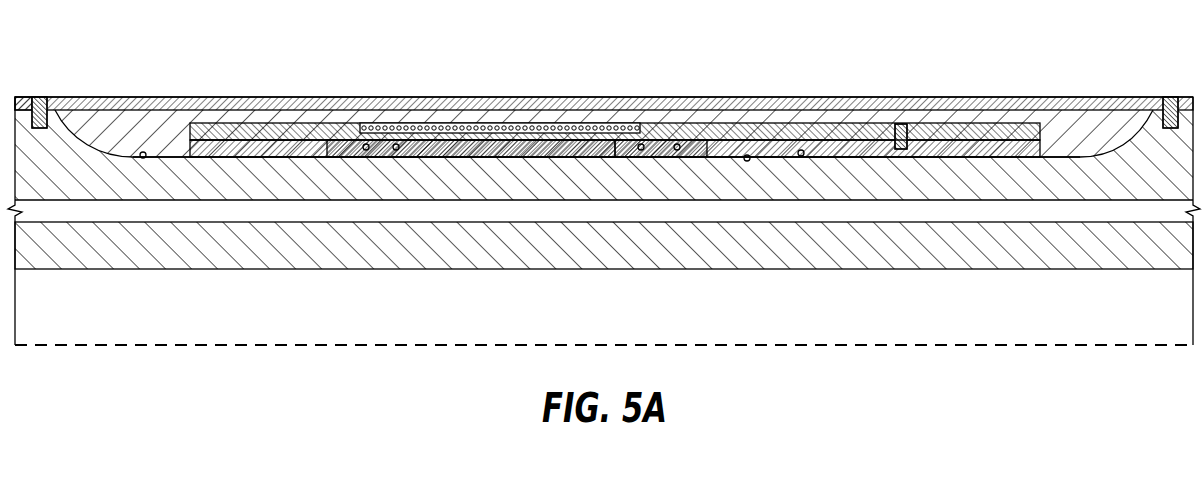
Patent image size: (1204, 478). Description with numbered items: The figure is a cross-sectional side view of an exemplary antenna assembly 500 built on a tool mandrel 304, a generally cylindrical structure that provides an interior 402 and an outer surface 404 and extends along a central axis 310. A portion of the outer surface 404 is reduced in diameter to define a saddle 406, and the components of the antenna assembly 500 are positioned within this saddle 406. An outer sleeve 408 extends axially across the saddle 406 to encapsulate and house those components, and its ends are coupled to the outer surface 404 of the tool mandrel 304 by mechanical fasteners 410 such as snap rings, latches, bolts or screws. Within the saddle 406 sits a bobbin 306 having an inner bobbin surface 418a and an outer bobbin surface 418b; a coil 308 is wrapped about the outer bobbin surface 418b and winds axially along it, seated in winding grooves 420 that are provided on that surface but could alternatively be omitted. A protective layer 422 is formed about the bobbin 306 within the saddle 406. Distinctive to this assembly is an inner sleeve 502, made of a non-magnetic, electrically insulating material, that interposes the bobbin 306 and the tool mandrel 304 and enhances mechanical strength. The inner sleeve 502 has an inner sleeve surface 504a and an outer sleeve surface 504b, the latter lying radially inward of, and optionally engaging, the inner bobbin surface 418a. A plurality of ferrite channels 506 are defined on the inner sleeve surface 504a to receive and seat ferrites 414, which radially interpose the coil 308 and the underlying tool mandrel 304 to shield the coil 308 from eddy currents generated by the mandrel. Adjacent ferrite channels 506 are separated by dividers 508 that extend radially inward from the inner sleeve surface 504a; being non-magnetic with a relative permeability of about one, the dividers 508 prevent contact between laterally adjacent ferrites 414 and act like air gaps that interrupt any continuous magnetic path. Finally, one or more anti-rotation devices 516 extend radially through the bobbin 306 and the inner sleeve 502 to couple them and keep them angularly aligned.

The antenna assembly 500 is at (88, 30).
The interior 402 is at (612, 322).
The tool mandrel 304 is at (50, 266).
The bobbin 306 is at (1031, 130).
The coil 308 is at (445, 135).
The central axis 310 is at (745, 345).
The outer surface 404 is at (20, 97).
The saddle 406 is at (135, 157).
The outer sleeve 408 is at (990, 103).
The mechanical fasteners 410 is at (50, 110).
The ferrites 414 is at (592, 127).
The inner bobbin surface 418a is at (226, 141).
The outer bobbin surface 418b is at (934, 134).
The winding grooves 420 is at (444, 126).
The protective layer 422 is at (132, 118).
The inner sleeve 502 is at (778, 148).
The inner sleeve surface 504a is at (745, 155).
The outer sleeve surface 504b is at (799, 156).
The ferrite channels 506 is at (366, 144).
The dividers 508 is at (522, 158).
The anti-rotation devices 516 is at (898, 136).